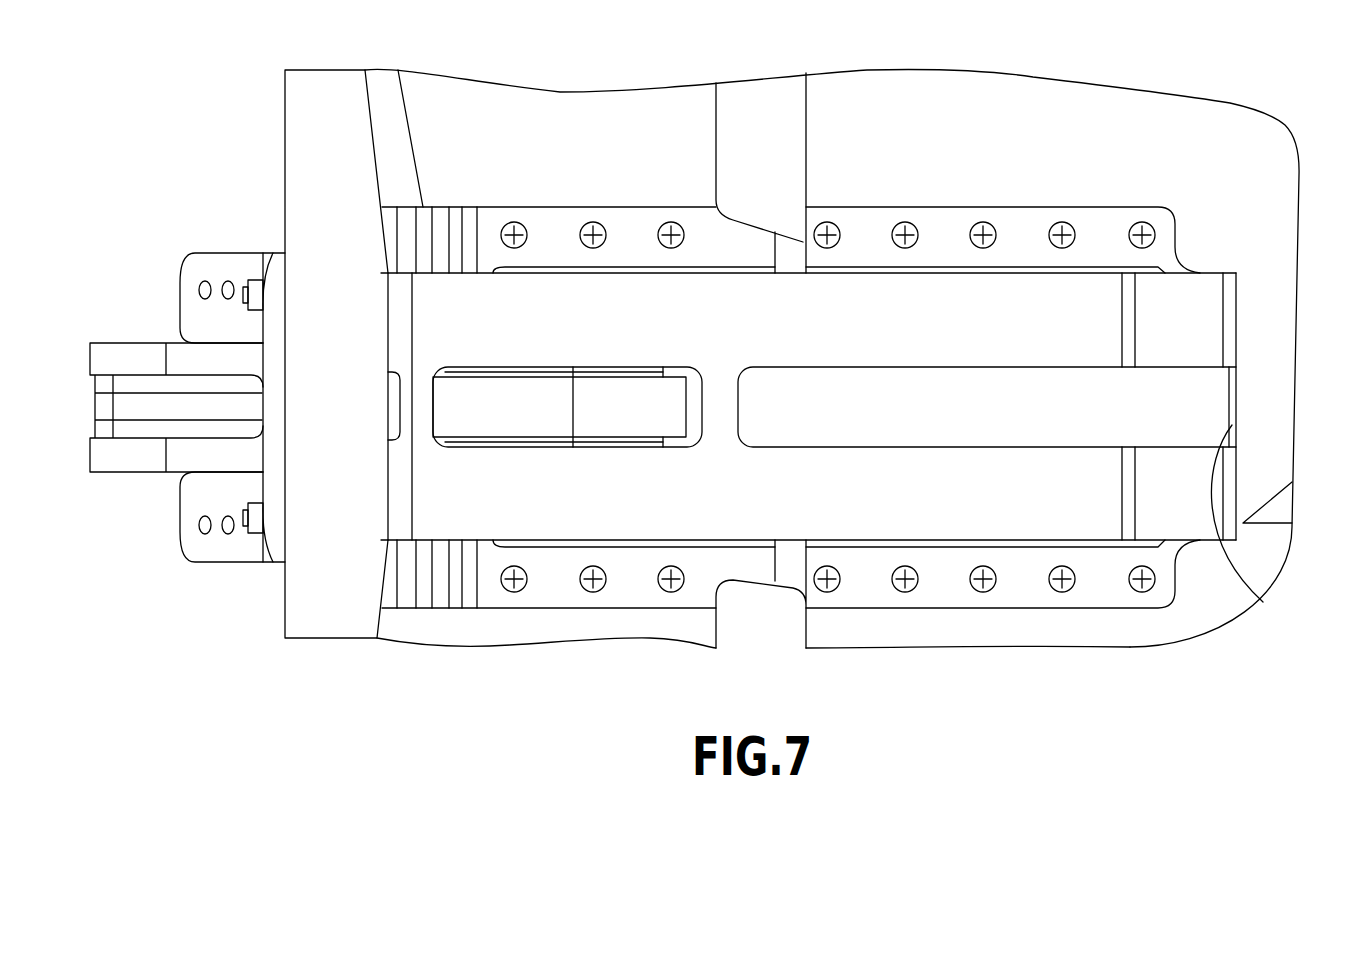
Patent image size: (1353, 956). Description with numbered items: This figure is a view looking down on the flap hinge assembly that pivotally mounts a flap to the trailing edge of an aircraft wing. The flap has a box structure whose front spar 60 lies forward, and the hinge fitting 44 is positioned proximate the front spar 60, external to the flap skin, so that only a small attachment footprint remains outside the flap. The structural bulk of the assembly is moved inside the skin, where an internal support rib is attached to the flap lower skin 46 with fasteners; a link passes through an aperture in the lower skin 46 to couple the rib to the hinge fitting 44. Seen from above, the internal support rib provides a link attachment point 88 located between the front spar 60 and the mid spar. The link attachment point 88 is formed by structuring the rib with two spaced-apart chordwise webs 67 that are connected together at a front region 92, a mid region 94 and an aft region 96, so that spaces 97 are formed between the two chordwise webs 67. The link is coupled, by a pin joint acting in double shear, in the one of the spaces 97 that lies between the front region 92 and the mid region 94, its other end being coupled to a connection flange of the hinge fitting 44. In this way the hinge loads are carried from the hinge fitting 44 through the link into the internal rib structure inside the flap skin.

The hinge fitting 44 is at (232, 268).
The lower skin 46 is at (568, 630).
The front spar 60 is at (333, 107).
The chordwise webs 67 is at (1087, 307).
The link attachment point 88 is at (603, 398).
The front region 92 is at (435, 395).
The mid region 94 is at (738, 407).
The aft region 96 is at (1263, 602).
The spaces 97 is at (974, 392).